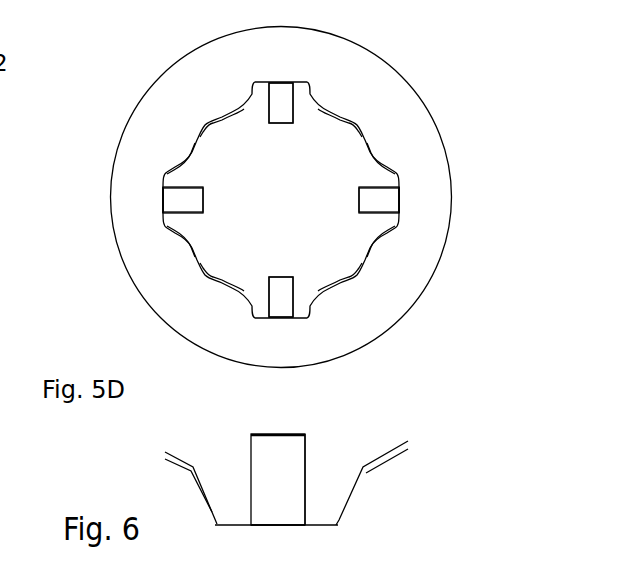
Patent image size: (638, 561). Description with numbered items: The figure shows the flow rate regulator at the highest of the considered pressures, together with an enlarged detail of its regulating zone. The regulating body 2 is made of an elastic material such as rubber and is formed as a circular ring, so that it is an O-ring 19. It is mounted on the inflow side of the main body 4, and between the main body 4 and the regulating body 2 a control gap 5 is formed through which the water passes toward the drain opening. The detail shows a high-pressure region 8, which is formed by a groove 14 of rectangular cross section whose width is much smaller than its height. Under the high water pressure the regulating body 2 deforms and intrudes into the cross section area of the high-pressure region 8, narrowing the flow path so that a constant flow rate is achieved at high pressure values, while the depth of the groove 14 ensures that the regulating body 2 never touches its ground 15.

In FIG. 5D, the regulating body 2 is at (363, 73).
In FIG. 6, the main body 4 is at (218, 459).
In FIG. 6, the control gap 5 is at (298, 505).
In FIG. 6, the high-pressure region 8 is at (284, 493).
In FIG. 6, the groove 14 is at (272, 508).
In FIG. 6, the ground 15 is at (278, 440).
In FIG. 6, the O-ring 19 is at (189, 521).